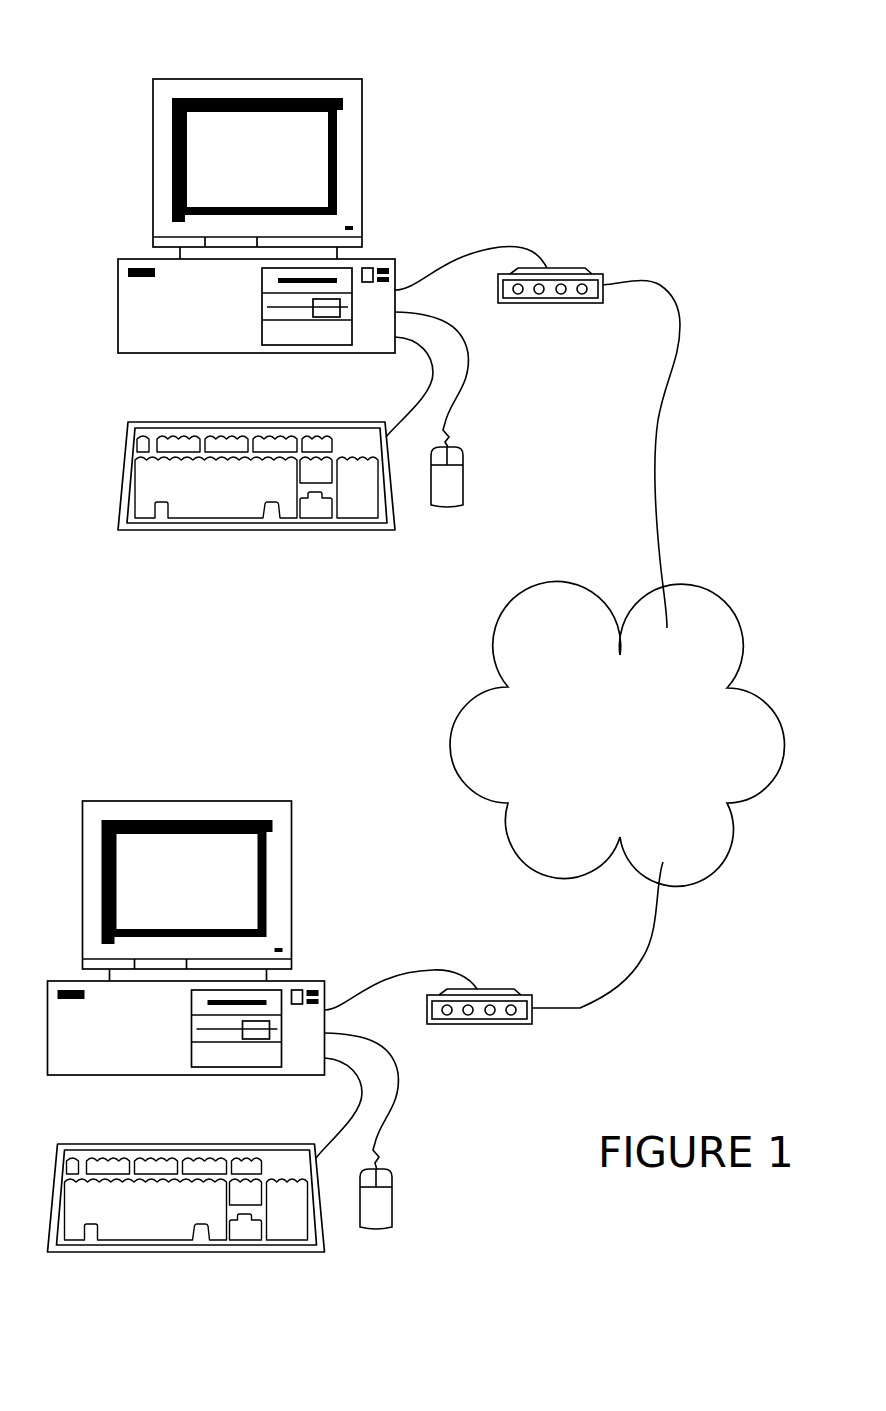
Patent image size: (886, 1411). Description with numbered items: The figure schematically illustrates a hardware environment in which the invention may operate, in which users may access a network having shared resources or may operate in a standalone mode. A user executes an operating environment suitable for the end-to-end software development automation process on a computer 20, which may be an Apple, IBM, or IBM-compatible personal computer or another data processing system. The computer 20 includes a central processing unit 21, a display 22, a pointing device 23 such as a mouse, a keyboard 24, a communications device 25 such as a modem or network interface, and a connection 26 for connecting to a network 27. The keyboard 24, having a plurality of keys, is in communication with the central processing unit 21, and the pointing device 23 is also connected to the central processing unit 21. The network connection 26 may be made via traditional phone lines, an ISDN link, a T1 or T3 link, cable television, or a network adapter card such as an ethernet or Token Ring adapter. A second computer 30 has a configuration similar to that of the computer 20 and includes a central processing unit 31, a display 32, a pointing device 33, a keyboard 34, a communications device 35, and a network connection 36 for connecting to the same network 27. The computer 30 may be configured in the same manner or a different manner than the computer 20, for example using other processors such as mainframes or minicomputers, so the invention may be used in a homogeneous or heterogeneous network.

The computer 20 is at (517, 80).
The central processing unit 21 is at (392, 259).
The display 22 is at (310, 79).
The pointing device 23 is at (463, 465).
The keyboard 24 is at (255, 530).
The communications device 25 is at (568, 268).
The connection 26 is at (681, 322).
The network 27 is at (573, 628).
The computer 30 is at (143, 747).
The central processing unit 31 is at (322, 978).
The display 32 is at (238, 801).
The pointing device 33 is at (393, 1185).
The keyboard 34 is at (185, 1252).
The communications device 35 is at (495, 989).
The network connection 36 is at (583, 1008).